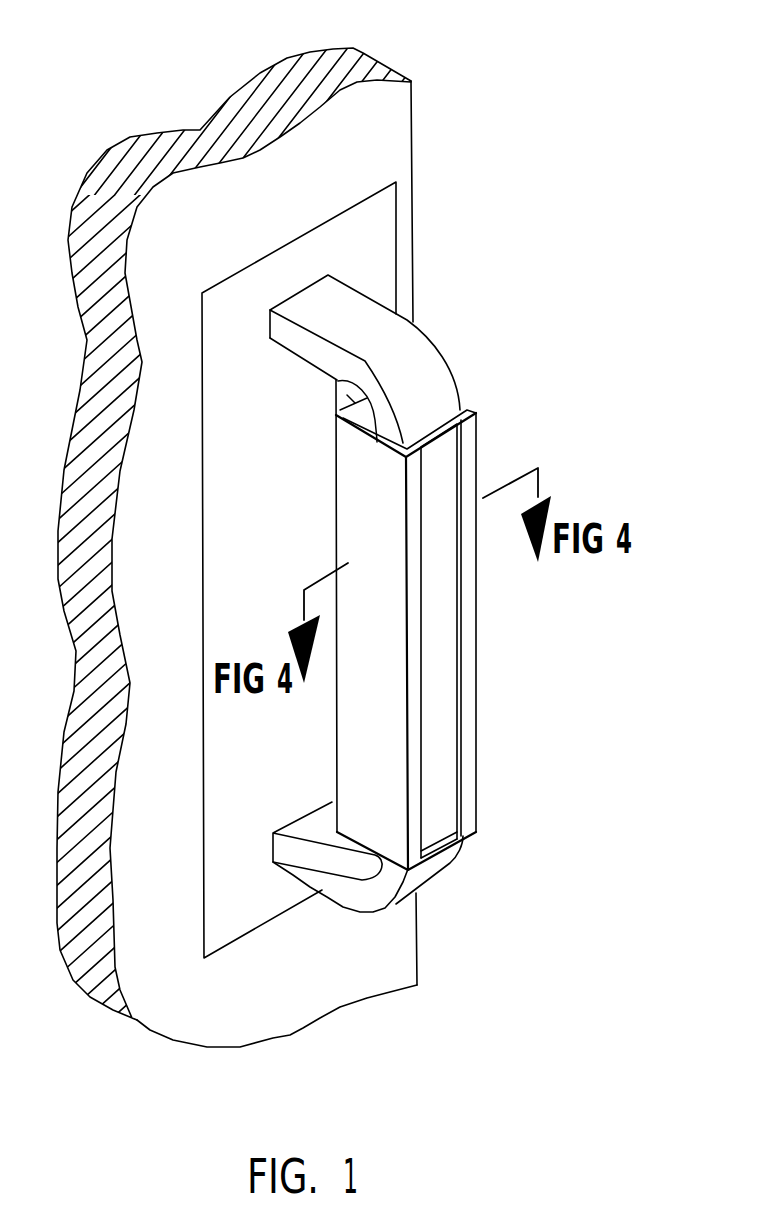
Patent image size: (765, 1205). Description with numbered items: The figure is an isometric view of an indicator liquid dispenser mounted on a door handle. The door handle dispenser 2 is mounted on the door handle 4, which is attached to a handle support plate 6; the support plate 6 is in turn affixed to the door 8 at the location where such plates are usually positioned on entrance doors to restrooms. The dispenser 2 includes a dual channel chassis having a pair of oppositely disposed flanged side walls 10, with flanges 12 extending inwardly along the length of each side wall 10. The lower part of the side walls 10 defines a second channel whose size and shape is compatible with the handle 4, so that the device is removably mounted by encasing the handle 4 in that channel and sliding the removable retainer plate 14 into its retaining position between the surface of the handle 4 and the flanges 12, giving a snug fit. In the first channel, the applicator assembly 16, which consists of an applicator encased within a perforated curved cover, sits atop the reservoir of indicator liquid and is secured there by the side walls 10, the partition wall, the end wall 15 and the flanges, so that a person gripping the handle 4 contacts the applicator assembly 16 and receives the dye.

The door handle dispenser 2 is at (408, 593).
The door handle 4 is at (357, 371).
The handle support plate 6 is at (377, 242).
The door 8 is at (390, 122).
The flanged side walls 10 is at (409, 646).
The flanges 12 is at (470, 715).
The removable retainer plate 14 is at (443, 677).
The end wall 15 is at (450, 830).
The applicator assembly 16 is at (336, 381).